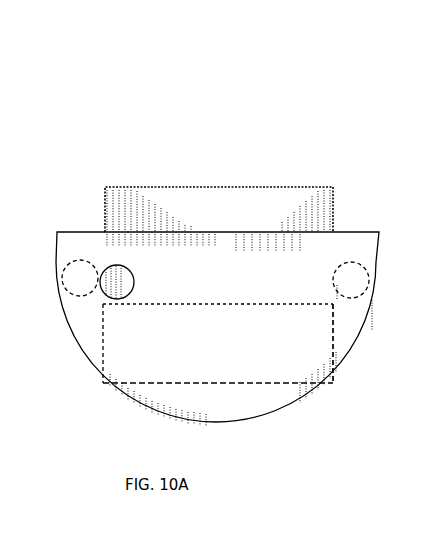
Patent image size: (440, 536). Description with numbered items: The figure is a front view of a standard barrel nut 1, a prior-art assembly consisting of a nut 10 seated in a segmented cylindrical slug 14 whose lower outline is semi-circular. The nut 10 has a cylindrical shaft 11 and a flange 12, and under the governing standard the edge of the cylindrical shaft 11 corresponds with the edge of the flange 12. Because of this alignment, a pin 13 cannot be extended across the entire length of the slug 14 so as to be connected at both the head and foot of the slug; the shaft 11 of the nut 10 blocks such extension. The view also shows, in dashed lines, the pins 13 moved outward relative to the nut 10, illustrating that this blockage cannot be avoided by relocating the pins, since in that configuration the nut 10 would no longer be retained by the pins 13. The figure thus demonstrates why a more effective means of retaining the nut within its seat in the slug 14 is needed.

The barrel nut 1 is at (343, 173).
The nut 10 is at (285, 195).
The cylindrical shaft 11 is at (97, 314).
The flange 12 is at (278, 348).
The pin 13 is at (337, 266).
The slug 14 is at (228, 414).